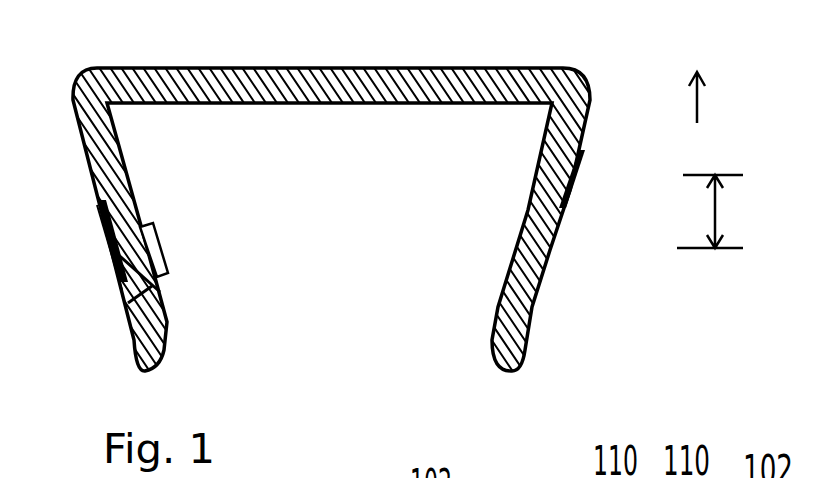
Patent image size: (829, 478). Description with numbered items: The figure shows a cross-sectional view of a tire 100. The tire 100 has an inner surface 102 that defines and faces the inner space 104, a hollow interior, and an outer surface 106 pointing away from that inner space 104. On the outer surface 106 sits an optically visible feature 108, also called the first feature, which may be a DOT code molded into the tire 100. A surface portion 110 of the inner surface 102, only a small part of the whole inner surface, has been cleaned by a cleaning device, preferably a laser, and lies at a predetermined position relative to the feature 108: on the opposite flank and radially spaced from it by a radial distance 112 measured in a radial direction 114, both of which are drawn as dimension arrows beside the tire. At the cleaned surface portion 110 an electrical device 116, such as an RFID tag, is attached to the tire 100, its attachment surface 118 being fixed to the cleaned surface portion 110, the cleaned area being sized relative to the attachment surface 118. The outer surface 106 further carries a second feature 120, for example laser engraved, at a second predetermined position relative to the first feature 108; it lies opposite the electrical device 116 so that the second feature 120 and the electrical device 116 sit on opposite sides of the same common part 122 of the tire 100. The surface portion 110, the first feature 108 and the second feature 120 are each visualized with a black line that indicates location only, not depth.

The tire 100 is at (573, 66).
The inner surface 102 is at (288, 105).
The inner space 104 is at (460, 200).
The outer surface 106 is at (552, 252).
The optically visible feature 108 is at (578, 180).
The surface portion 110 is at (140, 222).
The radial distance 112 is at (717, 215).
The radial direction 114 is at (699, 97).
The electrical device 116 is at (165, 250).
The attachment surface 118 is at (128, 303).
The second feature 120 is at (112, 264).
The common part 122 is at (98, 208).